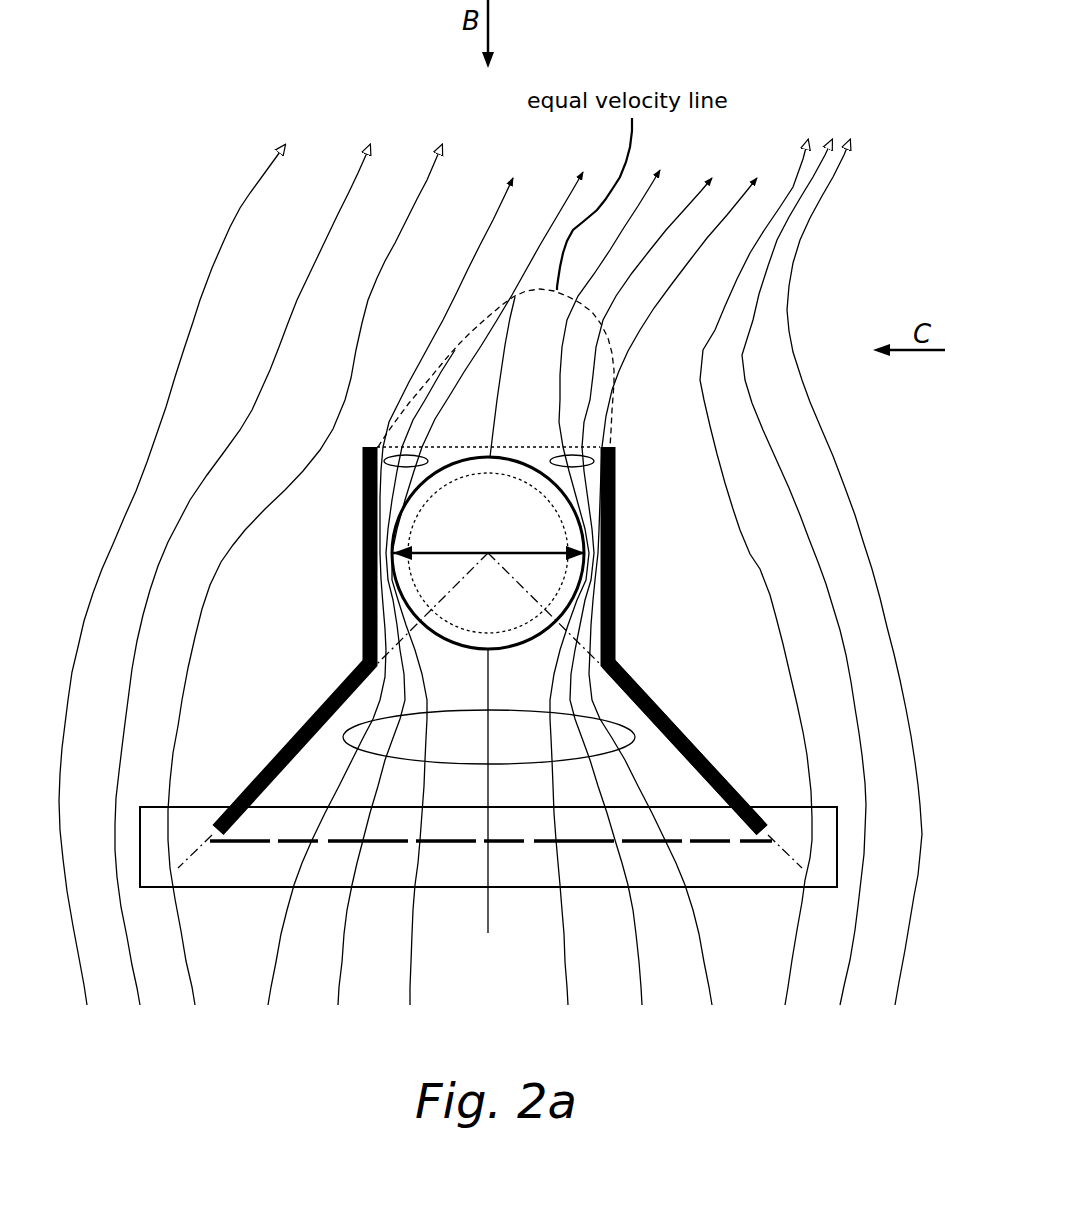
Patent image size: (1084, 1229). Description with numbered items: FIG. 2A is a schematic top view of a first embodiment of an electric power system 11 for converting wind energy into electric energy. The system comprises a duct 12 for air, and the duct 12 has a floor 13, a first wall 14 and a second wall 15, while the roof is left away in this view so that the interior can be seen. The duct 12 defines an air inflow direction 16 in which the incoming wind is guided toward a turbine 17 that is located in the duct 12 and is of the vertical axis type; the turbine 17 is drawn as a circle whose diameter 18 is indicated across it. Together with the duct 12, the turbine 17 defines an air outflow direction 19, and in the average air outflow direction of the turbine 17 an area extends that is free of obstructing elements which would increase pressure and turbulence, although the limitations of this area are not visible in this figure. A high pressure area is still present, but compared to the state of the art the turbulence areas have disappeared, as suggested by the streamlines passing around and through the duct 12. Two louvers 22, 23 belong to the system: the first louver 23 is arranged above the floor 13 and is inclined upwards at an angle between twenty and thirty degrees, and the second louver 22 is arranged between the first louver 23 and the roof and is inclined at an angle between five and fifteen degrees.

The electric power system 11 is at (378, 922).
The duct 12 is at (538, 694).
The floor 13 is at (695, 812).
The first wall 14 is at (363, 565).
The second wall 15 is at (618, 565).
The air inflow direction 16 is at (457, 765).
The turbine 17 is at (522, 513).
The diameter 18 is at (488, 553).
The air outflow direction 19 is at (553, 454).
The second louver 22 is at (488, 885).
The first louver 23 is at (227, 888).